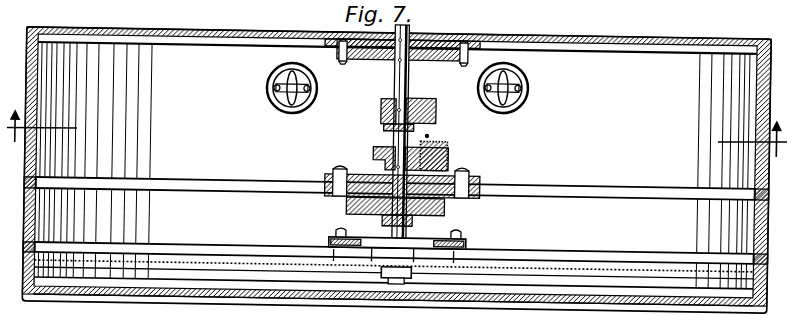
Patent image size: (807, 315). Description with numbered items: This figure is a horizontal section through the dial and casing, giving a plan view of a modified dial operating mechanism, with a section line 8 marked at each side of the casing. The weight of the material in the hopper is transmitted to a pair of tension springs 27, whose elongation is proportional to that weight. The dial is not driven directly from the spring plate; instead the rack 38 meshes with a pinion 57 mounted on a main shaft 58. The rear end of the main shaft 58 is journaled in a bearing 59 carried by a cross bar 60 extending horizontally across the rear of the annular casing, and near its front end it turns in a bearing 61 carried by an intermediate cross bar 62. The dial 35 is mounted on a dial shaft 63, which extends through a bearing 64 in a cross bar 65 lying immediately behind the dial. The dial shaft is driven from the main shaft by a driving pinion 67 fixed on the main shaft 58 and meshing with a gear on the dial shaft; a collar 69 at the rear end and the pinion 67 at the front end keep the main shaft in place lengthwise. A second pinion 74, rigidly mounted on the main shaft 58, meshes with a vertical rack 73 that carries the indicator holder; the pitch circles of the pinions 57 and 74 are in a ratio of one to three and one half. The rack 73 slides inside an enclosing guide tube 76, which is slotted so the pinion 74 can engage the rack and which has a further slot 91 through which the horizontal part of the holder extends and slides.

The section line 8 is at (397, 122).
The tension springs 27 is at (287, 112).
The dial 35 is at (134, 266).
The rack 38 is at (434, 108).
The pinion 57 is at (380, 105).
The main shaft 58 is at (396, 66).
The bearing 59 is at (461, 61).
The cross bar 60 is at (676, 45).
The bearing 61 is at (470, 177).
The cross bar 62 is at (143, 186).
The dial shaft 63 is at (394, 235).
The bearing 64 is at (434, 239).
The cross bar 65 is at (546, 246).
The driving gear or pinion 67 is at (346, 208).
The collar 69 is at (408, 36).
The rack 73 is at (447, 149).
The pinion 74 is at (424, 132).
The guide tube 76 is at (452, 159).
The slot 91 is at (426, 136).